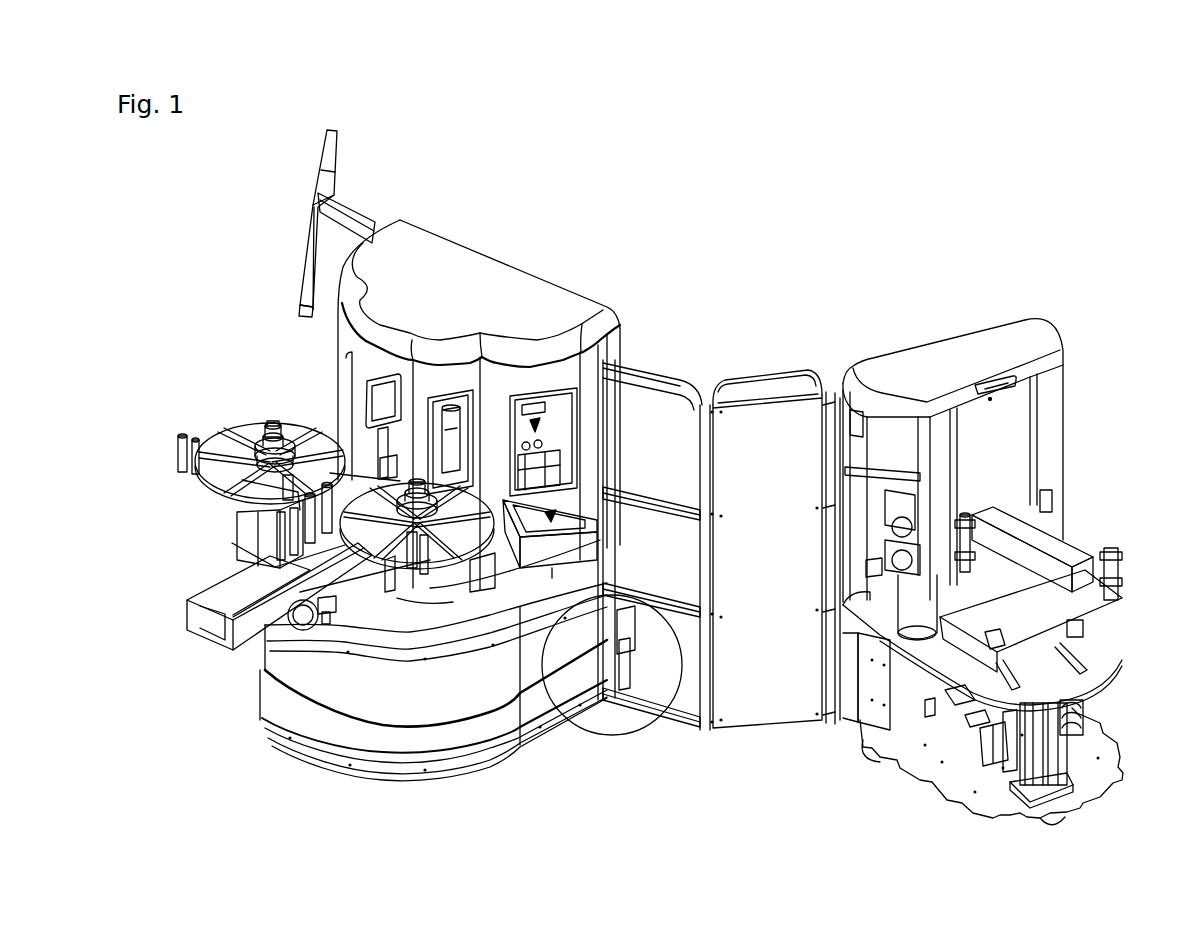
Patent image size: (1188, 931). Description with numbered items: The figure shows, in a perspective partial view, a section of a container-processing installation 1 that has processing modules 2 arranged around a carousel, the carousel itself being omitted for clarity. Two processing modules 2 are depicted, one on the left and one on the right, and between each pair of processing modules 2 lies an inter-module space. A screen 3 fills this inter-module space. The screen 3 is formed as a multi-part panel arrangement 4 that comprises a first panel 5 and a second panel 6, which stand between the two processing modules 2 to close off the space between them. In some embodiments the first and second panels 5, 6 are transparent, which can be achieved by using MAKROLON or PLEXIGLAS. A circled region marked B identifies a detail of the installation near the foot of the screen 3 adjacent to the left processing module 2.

The container-processing installation 1 is at (772, 215).
The processing module 2 is at (1060, 350).
The screen 3 is at (619, 436).
The multi-part panel arrangement 4 is at (362, 170).
The first panel 5 is at (776, 549).
The second panel 6 is at (656, 537).
The detail region B is at (600, 737).